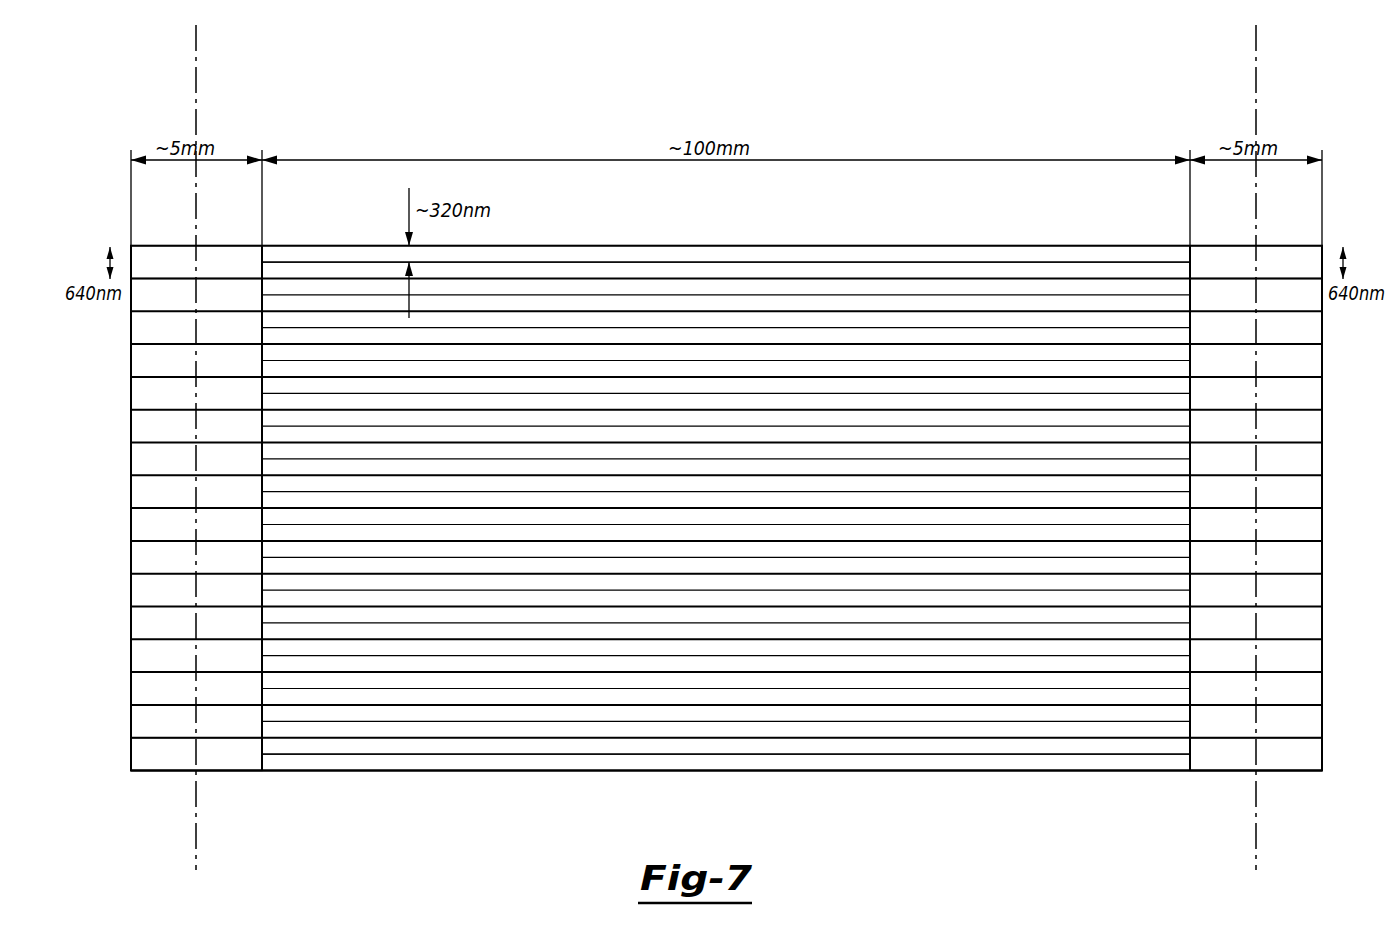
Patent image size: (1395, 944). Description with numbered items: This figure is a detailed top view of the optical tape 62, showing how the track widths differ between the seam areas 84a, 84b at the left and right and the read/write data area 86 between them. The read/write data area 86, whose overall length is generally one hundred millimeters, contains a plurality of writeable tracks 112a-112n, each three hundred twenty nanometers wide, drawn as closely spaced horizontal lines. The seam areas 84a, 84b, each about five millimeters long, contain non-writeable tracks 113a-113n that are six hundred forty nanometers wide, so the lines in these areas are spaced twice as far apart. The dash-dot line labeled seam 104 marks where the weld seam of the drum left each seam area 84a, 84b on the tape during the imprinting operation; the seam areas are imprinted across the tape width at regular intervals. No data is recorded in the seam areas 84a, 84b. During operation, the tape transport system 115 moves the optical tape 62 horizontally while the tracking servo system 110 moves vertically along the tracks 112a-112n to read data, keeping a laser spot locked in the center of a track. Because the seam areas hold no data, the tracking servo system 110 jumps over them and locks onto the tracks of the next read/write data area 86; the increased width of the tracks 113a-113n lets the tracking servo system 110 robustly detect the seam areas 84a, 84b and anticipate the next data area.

The optical tape 62 is at (808, 117).
The seam 104 is at (196, 104).
The tracking servo system 110 is at (565, 141).
The tape transport system 115 is at (433, 141).
The track 112a is at (718, 255).
The track 112n is at (693, 760).
The track 113a is at (203, 245).
The track 113n is at (243, 773).
The seam area 84a is at (212, 786).
The seam area 84b is at (1228, 786).
The read/write data area 86 is at (488, 815).